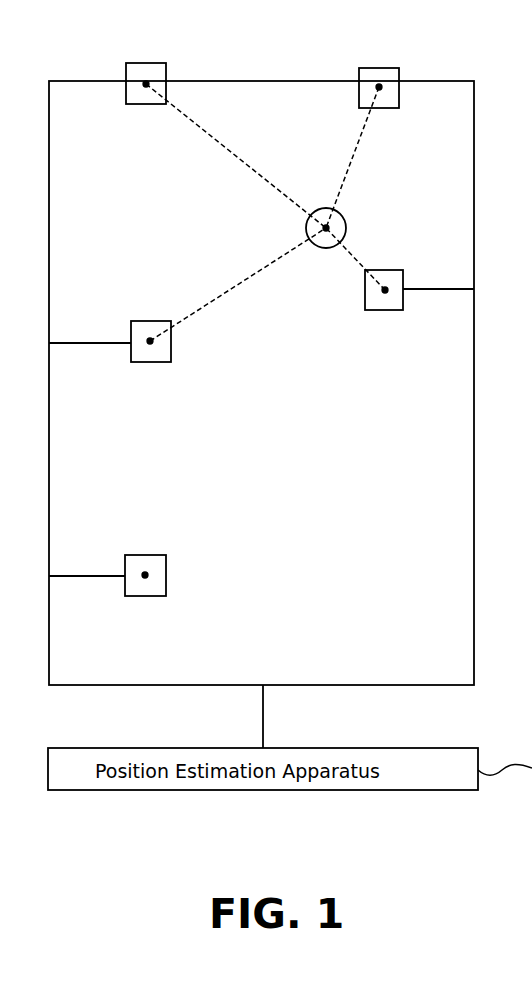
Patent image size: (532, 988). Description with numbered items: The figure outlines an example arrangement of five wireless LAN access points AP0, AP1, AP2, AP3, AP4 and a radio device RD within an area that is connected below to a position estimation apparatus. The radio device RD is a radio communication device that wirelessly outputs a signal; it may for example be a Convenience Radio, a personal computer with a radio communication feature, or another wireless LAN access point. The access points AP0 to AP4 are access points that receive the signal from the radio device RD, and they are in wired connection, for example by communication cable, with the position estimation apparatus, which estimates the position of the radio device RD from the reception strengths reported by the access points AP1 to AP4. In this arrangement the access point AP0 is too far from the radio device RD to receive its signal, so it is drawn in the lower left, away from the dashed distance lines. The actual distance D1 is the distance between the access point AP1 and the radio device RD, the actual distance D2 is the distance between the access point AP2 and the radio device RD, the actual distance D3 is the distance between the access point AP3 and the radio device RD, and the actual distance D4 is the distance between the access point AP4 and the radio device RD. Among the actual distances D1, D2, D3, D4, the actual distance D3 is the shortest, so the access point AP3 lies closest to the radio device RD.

The wireless LAN access point AP0 is at (146, 553).
The wireless LAN access point AP1 is at (150, 319).
The wireless LAN access point AP2 is at (146, 62).
The wireless LAN access point AP3 is at (383, 312).
The wireless LAN access point AP4 is at (382, 66).
The radio device RD is at (322, 249).
The actual distance D1 is at (238, 284).
The actual distance D2 is at (236, 156).
The actual distance D3 is at (356, 259).
The actual distance D4 is at (358, 157).